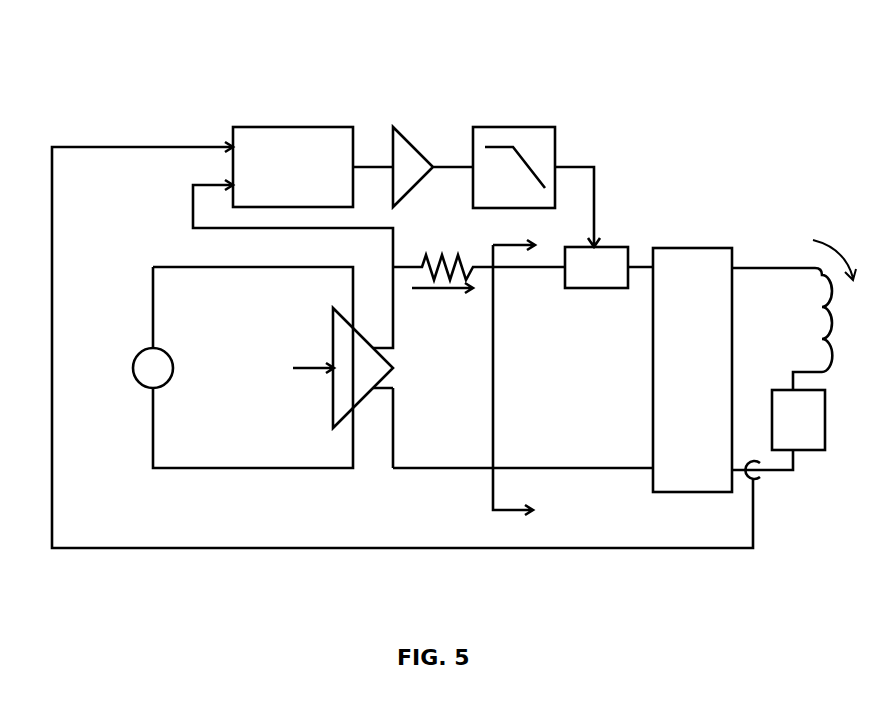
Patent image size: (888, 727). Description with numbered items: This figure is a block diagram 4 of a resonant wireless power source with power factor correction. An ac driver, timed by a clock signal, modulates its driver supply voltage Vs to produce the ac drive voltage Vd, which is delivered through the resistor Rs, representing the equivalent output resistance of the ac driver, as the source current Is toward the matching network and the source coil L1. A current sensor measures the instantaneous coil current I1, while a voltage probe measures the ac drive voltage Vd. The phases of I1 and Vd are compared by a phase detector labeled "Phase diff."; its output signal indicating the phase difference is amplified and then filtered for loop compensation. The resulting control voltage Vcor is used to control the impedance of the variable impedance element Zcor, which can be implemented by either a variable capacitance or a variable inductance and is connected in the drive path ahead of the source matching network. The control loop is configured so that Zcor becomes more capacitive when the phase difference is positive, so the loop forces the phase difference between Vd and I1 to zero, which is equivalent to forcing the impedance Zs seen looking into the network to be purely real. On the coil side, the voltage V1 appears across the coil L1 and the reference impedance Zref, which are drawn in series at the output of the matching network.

The block diagram 4 is at (78, 63).
The driver supply voltage Vs is at (243, 367).
The ac drive voltage Vd is at (385, 368).
The resistor Rs is at (523, 256).
The source current Is is at (442, 302).
The impedance Zs is at (514, 377).
The variable impedance element Zcor is at (596, 267).
The control voltage Vcor is at (593, 192).
The transmit coil L1 is at (782, 329).
The coil voltage V1 is at (762, 388).
The coil current I1 is at (844, 253).
The reference impedance Zref is at (798, 420).